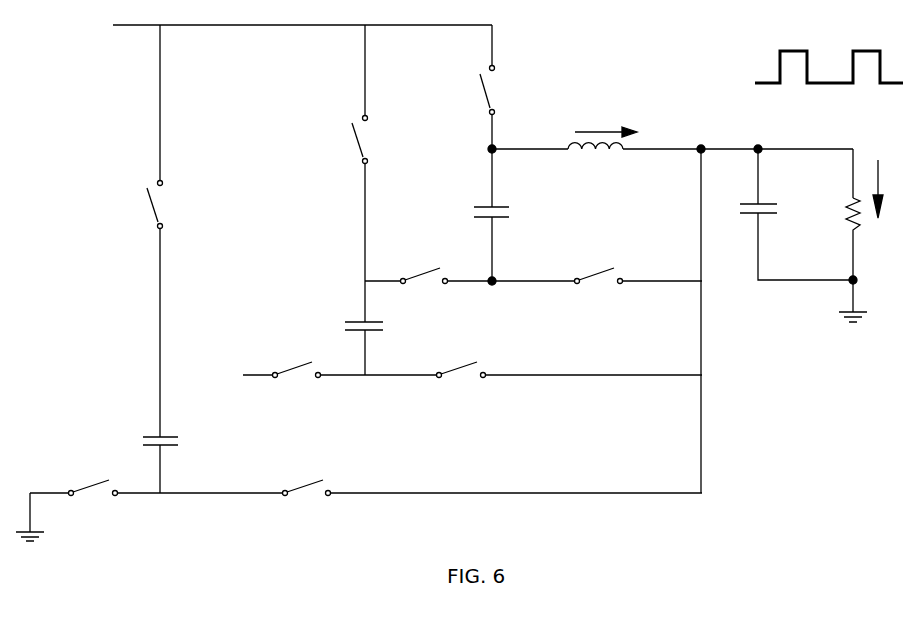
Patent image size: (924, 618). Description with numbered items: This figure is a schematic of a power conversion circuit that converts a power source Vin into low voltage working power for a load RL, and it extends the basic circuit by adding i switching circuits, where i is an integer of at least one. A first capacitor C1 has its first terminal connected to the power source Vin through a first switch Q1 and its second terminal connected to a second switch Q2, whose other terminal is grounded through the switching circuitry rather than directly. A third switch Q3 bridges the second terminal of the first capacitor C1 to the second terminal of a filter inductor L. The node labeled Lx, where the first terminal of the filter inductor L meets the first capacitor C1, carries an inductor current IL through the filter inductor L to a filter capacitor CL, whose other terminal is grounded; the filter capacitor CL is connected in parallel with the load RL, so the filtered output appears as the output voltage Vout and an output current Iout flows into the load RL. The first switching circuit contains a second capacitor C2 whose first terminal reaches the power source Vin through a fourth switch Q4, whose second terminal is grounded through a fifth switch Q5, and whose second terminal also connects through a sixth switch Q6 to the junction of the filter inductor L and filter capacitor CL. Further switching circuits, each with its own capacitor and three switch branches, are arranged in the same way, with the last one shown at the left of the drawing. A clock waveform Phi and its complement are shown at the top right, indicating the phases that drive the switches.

The power source Vin is at (275, 24).
The output voltage Vout is at (760, 136).
The switching node Lx is at (504, 137).
The filter inductor L is at (595, 160).
The inductor current IL is at (606, 121).
The output current Iout is at (894, 189).
The first switch Q1 is at (472, 90).
The second switch Q2 is at (424, 293).
The third switch Q3 is at (599, 293).
The fourth switch Q4 is at (340, 140).
The fifth switch Q5 is at (297, 387).
The sixth switch Q6 is at (461, 387).
The first capacitor C1 is at (505, 216).
The second capacitor C2 is at (332, 334).
The filter capacitor CL is at (764, 193).
The load RL is at (837, 215).
The clock phase signals Phi is at (840, 53).